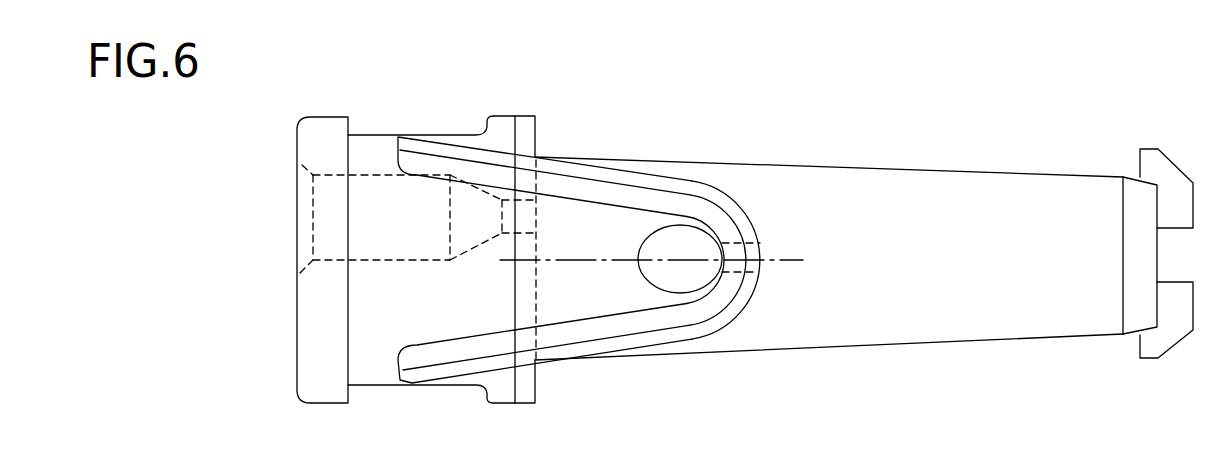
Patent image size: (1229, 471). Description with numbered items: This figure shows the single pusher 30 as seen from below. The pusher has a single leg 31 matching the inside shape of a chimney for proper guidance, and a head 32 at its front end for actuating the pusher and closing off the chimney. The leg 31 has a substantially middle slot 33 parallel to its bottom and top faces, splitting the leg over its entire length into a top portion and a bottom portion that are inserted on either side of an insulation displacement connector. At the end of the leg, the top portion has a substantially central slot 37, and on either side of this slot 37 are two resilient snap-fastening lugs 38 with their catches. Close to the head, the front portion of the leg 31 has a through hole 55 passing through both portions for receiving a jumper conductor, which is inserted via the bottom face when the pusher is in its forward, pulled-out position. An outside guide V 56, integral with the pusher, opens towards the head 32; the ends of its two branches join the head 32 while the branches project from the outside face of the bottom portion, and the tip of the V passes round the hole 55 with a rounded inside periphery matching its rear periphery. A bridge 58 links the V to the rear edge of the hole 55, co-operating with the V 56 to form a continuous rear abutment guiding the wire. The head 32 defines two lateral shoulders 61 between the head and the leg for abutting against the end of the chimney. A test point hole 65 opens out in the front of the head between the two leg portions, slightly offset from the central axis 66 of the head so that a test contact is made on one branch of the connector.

The single pusher 30 is at (317, 104).
The leg 31 is at (820, 156).
The head 32 is at (290, 148).
The middle slot 33 is at (908, 200).
The central slot 37 is at (1173, 252).
The snap-fastening lugs 38 is at (1142, 153).
The through hole 55 is at (693, 240).
The outside guide V 56 is at (605, 207).
The bridge 58 is at (727, 244).
The lateral shoulders 61 is at (537, 137).
The test point hole 65 is at (337, 177).
The central axis 66 is at (803, 262).